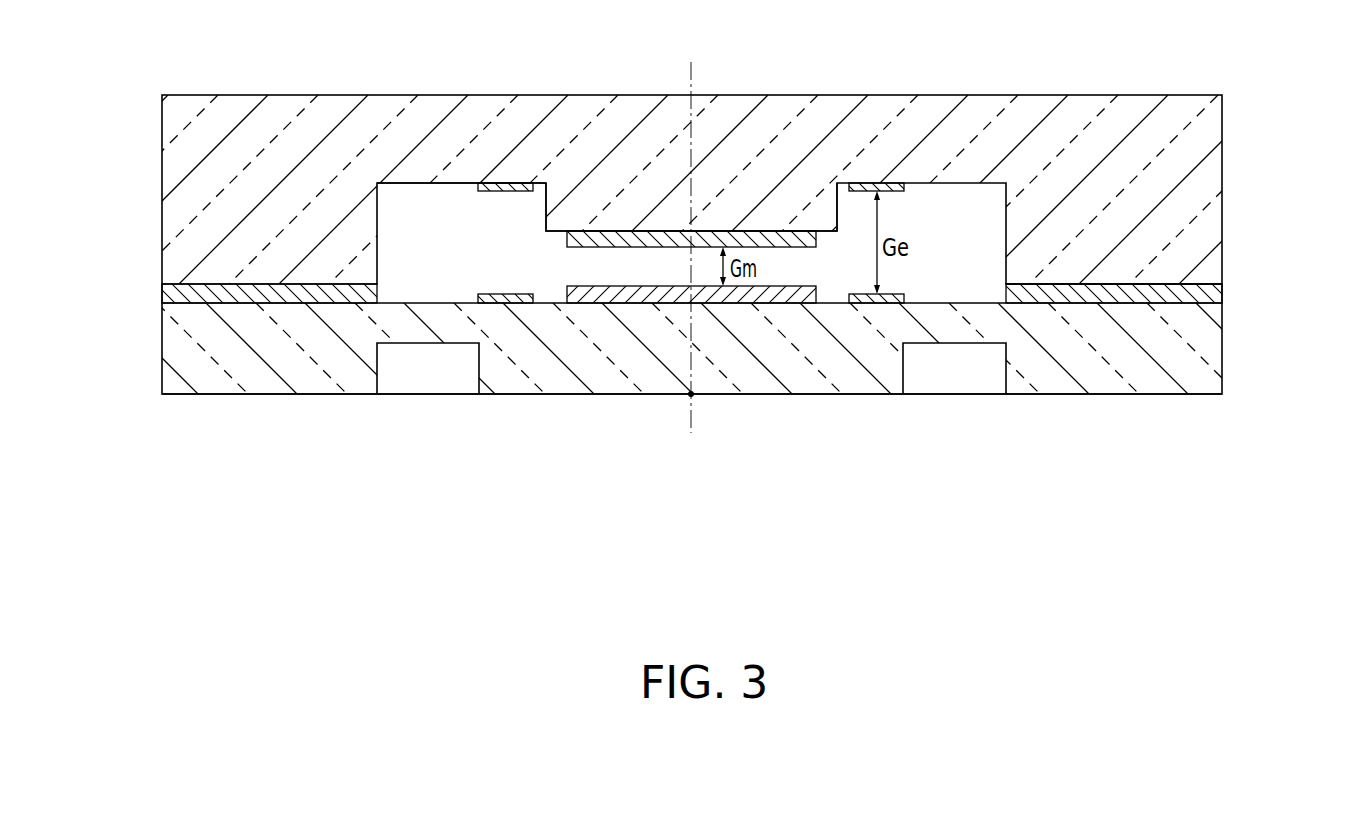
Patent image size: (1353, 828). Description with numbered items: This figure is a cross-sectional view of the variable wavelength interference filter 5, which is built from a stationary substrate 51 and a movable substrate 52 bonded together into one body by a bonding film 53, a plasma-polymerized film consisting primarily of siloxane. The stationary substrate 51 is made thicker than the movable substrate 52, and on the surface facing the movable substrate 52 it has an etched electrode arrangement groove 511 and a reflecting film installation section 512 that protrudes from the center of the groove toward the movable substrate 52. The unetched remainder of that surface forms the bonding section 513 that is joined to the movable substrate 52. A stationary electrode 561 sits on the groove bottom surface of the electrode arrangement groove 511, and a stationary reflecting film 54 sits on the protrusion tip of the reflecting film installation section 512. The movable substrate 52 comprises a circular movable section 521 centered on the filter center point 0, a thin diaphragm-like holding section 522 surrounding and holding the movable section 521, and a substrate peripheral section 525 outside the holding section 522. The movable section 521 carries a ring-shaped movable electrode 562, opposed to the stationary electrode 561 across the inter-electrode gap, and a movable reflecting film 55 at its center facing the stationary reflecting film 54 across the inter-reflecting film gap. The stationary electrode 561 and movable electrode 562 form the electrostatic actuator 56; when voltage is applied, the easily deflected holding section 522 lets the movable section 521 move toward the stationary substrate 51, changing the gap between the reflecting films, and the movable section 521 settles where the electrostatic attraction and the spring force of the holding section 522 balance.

The variable wavelength interference filter 5 is at (385, 469).
The stationary substrate 51 is at (172, 123).
The electrode arrangement groove 511 is at (456, 184).
The reflecting film installation section 512 is at (548, 208).
The bonding section 513 is at (1098, 290).
The movable substrate 52 is at (172, 360).
The movable section 521 is at (810, 394).
The holding section 522 is at (413, 343).
The substrate peripheral section 525 is at (1102, 377).
The bonding film 53 is at (1223, 293).
The stationary reflecting film 54 is at (655, 240).
The movable reflecting film 55 is at (643, 296).
The electrostatic actuator 56 is at (649, 243).
The stationary electrode 561 is at (510, 192).
The movable electrode 562 is at (508, 294).
The filter center point 0 is at (701, 247).